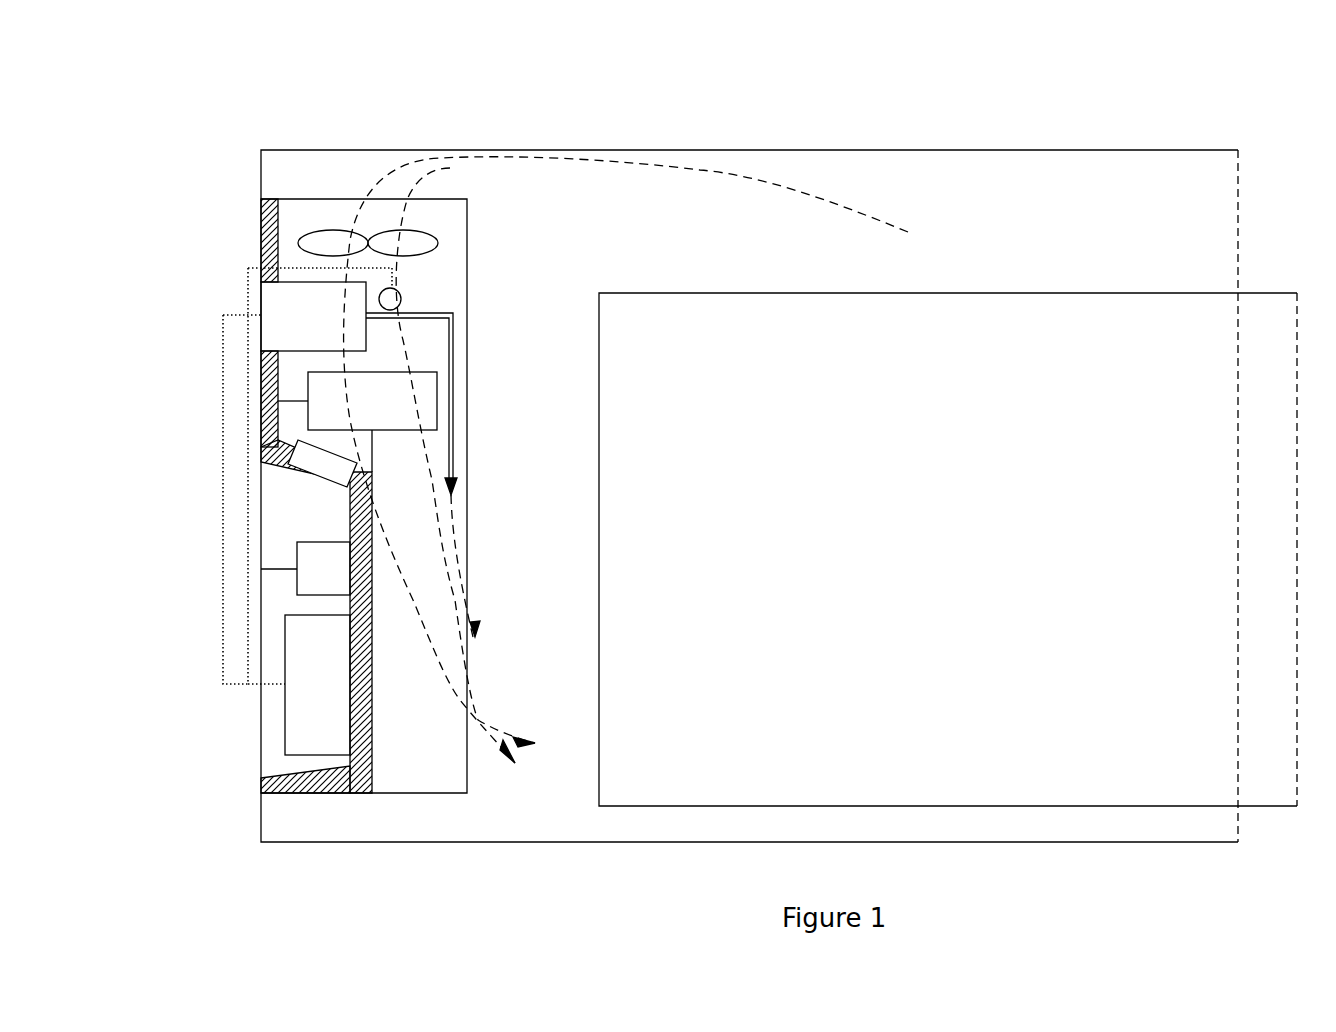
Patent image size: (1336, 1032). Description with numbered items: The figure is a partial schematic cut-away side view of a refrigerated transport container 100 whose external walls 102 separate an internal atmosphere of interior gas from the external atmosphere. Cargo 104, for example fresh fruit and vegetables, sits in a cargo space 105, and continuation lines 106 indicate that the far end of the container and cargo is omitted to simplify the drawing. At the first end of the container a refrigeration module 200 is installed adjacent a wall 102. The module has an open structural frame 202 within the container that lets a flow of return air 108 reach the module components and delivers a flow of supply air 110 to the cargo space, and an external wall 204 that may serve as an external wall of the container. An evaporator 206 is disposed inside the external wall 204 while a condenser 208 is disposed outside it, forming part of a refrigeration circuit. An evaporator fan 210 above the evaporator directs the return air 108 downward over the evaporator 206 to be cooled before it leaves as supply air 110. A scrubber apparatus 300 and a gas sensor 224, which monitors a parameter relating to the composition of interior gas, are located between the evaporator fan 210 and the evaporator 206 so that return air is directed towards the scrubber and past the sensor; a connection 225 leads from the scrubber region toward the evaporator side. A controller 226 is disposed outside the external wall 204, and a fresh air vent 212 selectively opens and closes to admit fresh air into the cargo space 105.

The transport container 100 is at (1092, 42).
The external walls 102 is at (888, 150).
The cargo 104 is at (1029, 564).
The cargo space 105 is at (1056, 258).
The continuation lines 106 is at (1300, 312).
The flow of return air 108 is at (700, 172).
The flow of supply air 110 is at (485, 725).
The refrigeration module 200 is at (313, 170).
The structural frame 202 is at (467, 199).
The external wall 204 is at (377, 743).
The evaporator 206 is at (404, 413).
The condenser 208 is at (297, 580).
The evaporator fan 210 is at (438, 243).
The fresh air vent 212 is at (345, 452).
The gas sensor 224 is at (401, 302).
The conduit 225 is at (453, 400).
The controller 226 is at (290, 718).
The scrubber apparatus 300 is at (307, 476).